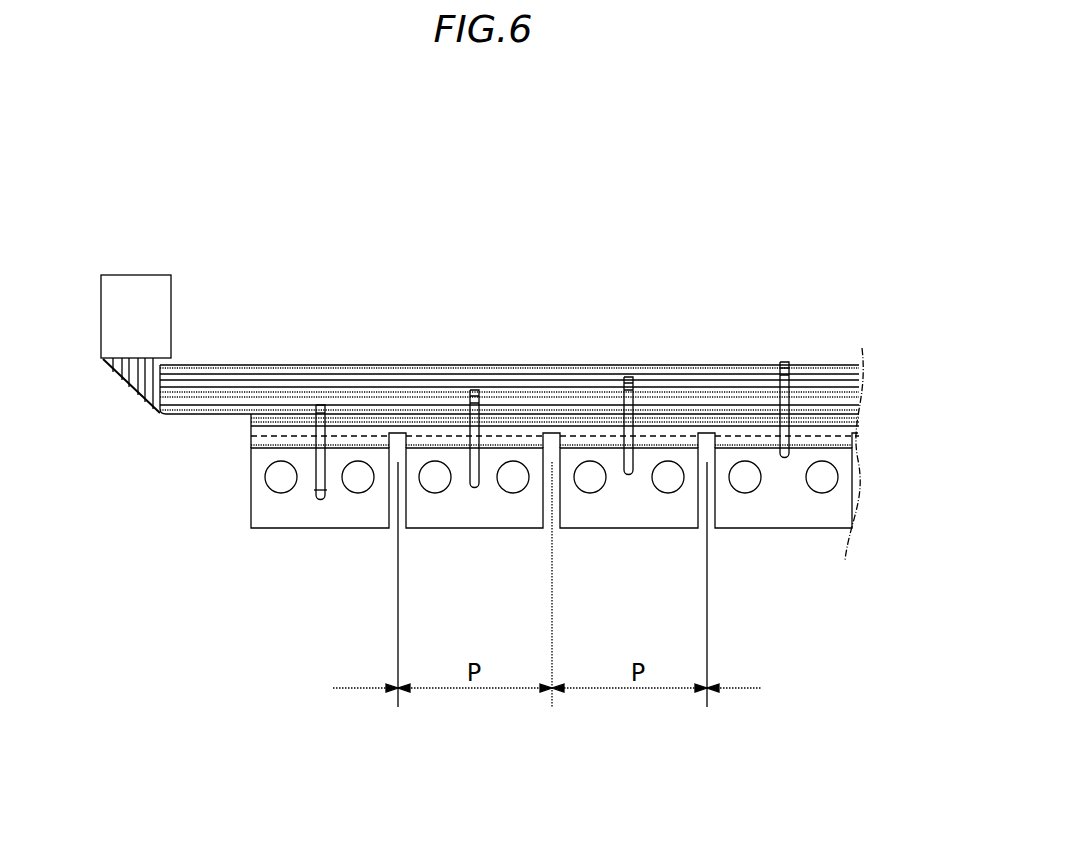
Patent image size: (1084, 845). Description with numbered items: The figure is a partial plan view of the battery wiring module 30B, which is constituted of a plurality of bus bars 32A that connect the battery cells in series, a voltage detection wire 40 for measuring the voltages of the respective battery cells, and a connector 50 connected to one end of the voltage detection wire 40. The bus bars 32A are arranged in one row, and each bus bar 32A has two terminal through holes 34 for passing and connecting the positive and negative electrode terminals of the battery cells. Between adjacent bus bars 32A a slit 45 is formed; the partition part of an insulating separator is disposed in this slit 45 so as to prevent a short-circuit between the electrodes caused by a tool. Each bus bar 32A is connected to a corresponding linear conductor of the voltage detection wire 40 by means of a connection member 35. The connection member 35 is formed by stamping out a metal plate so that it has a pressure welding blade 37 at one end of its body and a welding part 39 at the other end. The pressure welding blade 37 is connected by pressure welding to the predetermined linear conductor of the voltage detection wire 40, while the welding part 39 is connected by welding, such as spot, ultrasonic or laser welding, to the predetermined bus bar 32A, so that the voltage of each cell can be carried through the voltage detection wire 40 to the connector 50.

The battery wiring module 30B is at (432, 362).
The bus bar 32A is at (370, 532).
The terminal through hole 34 is at (283, 468).
The connection member 35 is at (333, 440).
The pressure welding blade 37 is at (318, 403).
The welding part 39 is at (318, 485).
The voltage detection wire 40 is at (832, 362).
The slit 45 is at (394, 450).
The connector 50 is at (158, 303).